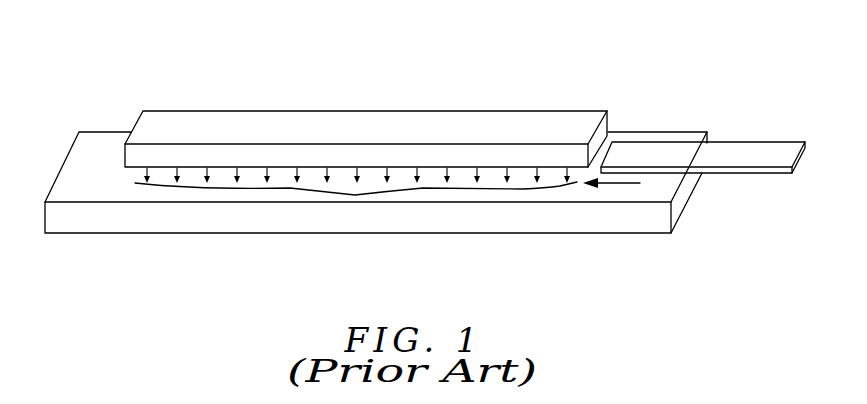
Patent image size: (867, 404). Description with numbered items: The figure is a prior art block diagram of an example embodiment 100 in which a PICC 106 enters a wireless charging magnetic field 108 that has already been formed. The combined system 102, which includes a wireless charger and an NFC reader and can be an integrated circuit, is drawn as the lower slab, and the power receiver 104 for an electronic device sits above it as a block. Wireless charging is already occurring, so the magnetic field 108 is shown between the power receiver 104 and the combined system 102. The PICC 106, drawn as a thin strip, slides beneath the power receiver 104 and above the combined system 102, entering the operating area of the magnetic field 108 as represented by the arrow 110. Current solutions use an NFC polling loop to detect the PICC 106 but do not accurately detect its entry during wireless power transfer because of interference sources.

The example embodiment 100 is at (697, 47).
The combined system 102 is at (150, 233).
The power receiver 104 is at (193, 110).
The PICC 106 is at (743, 142).
The magnetic field 108 is at (358, 208).
The arrow 110 is at (613, 188).